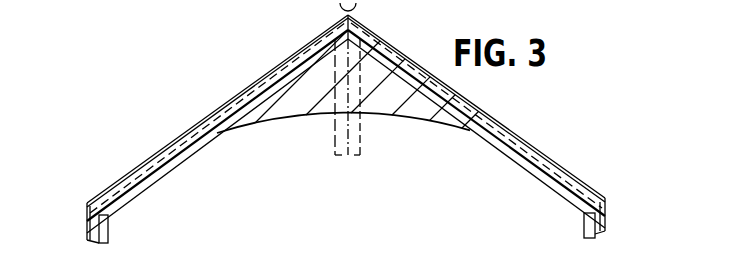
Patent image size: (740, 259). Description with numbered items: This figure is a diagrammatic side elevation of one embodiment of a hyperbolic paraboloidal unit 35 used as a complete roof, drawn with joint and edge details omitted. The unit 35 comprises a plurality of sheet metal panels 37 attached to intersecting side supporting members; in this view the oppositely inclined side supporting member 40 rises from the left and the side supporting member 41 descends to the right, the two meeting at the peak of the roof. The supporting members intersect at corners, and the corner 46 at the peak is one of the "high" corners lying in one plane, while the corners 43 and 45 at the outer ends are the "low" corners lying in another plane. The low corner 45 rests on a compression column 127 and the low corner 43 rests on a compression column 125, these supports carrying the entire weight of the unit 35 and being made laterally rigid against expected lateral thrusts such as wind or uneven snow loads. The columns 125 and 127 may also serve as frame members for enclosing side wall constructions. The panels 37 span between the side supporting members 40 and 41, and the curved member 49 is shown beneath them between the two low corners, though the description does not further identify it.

The hyperbolic paraboloidal unit 35 is at (108, 144).
The sheet metal panel 37 is at (397, 100).
The side supporting member 40 is at (191, 136).
The side supporting member 41 is at (460, 112).
The low corner 43 is at (606, 203).
The low corner 45 is at (86, 204).
The high corner 46 is at (350, 16).
The arched brace 49 is at (277, 102).
The compression column 125 is at (603, 231).
The compression column 127 is at (109, 228).